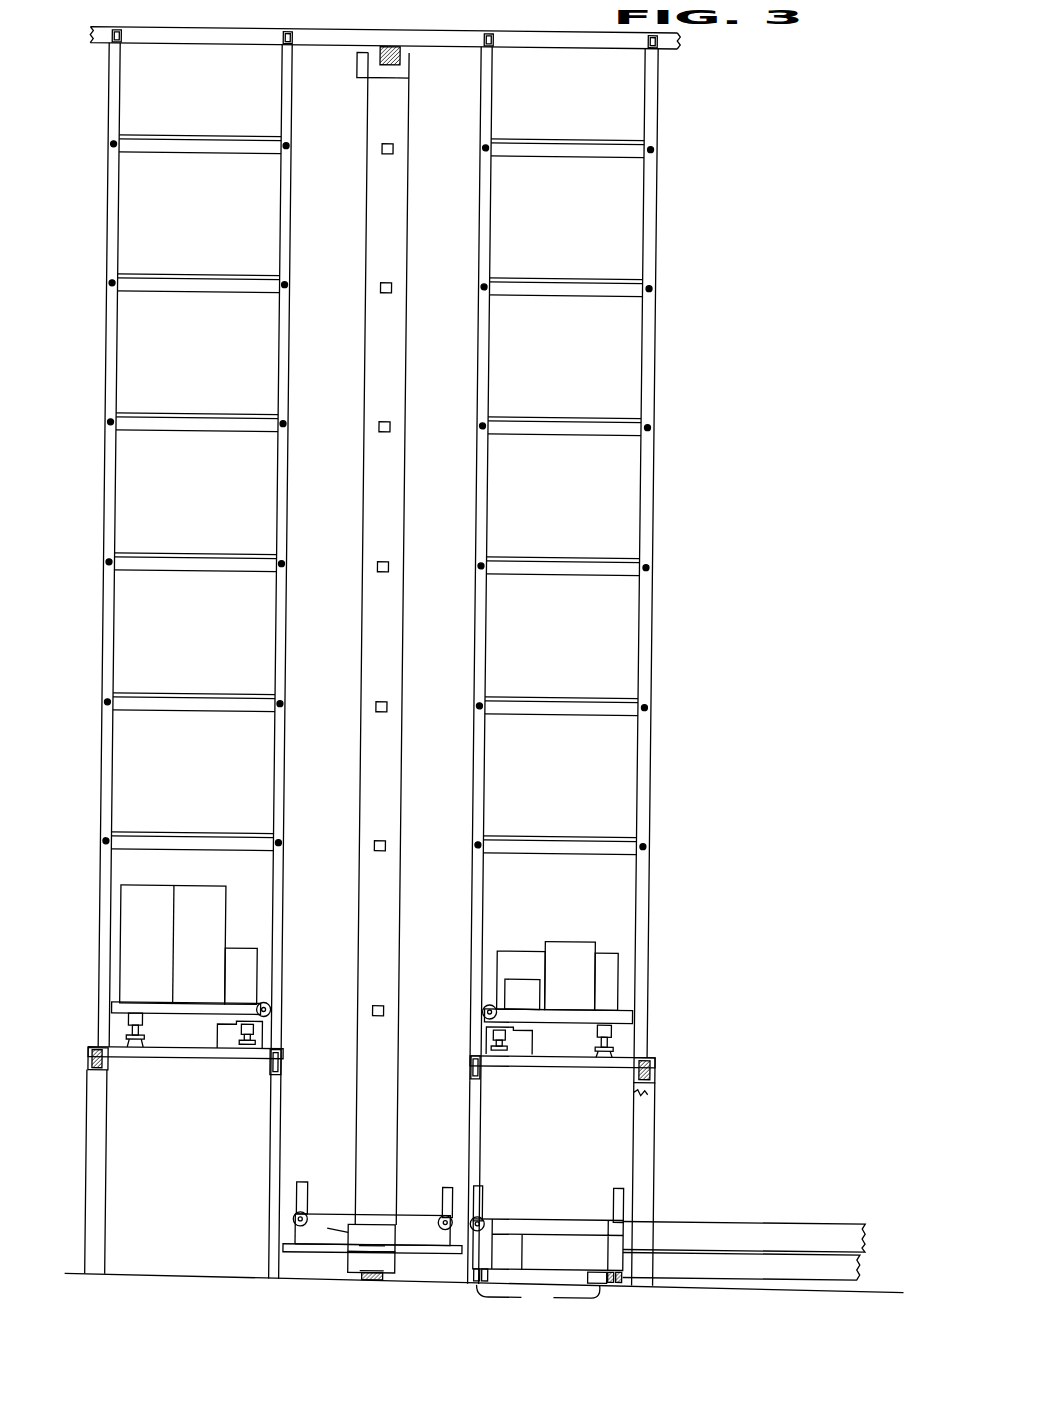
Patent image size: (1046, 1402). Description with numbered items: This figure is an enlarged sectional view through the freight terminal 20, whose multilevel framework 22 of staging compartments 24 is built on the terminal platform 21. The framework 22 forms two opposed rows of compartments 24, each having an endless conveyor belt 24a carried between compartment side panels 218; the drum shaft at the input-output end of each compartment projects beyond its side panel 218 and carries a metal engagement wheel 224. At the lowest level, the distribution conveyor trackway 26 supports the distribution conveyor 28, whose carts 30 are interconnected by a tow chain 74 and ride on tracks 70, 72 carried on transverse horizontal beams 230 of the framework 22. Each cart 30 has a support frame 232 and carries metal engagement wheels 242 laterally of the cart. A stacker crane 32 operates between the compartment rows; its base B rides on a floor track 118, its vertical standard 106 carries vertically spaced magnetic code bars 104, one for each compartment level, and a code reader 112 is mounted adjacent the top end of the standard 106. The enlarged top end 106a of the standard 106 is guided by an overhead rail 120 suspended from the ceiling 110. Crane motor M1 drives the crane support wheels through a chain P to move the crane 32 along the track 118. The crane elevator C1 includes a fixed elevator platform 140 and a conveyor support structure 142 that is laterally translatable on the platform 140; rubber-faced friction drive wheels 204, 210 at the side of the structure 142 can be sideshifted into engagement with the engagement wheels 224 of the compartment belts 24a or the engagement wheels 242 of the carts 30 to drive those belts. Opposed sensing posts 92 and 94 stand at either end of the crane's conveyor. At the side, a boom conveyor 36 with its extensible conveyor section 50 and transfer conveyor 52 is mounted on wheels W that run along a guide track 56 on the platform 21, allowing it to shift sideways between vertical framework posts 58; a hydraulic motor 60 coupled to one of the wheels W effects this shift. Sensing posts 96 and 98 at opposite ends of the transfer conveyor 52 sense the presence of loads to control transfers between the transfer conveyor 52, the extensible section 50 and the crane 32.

The freight terminal 20 is at (428, 644).
The freight terminal platform 21 is at (889, 1287).
The multilevel framework 22 is at (652, 347).
The shipment staging compartment 24 is at (408, 480).
The endless conveyor belt 24a is at (186, 276).
The distribution conveyor trackway 26 is at (128, 1034).
The distribution conveyor 28 is at (379, 998).
The cart 30 is at (138, 1003).
The stacker crane 32 is at (378, 615).
The boom conveyor 36 is at (744, 1228).
The extensible conveyor section 50 is at (826, 1220).
The transfer conveyor 52 is at (572, 1220).
The guide track 56 is at (622, 1282).
The vertical framework post 58 is at (638, 1157).
The hydraulic motor 60 is at (597, 1272).
The track 70 is at (249, 1049).
The track 72 is at (140, 1050).
The tow chain 74 is at (270, 1030).
The sensing post 92 is at (306, 1183).
The sensing post 94 is at (448, 1195).
The sensing post 96 is at (488, 1195).
The sensing post 98 is at (619, 1196).
The magnetic code bar 104 is at (388, 150).
The stacker crane vertical standard 106 is at (378, 615).
The enlarged top end 106a is at (402, 78).
The ceiling 110 is at (526, 48).
The code reader 112 is at (350, 72).
The floor track 118 is at (376, 1280).
The overhead rail 120 is at (383, 47).
The fixed elevator platform 140 is at (330, 1253).
The conveyor support structure 142 is at (305, 1212).
The rubber-faced friction drive wheel 204 is at (298, 1220).
The rubber-faced friction drive wheel 210 is at (444, 1222).
The compartment side panel 218 is at (542, 146).
The metal engagement wheel 224 is at (283, 290).
The transverse horizontal beam 230 is at (176, 1062).
The support frame 232 is at (262, 1003).
The metal engagement wheel 242 is at (276, 1012).
The base B is at (371, 1260).
The crane elevator C1 is at (300, 1233).
The crane motor M1 is at (371, 1237).
The chain P is at (330, 1227).
The wheel W is at (538, 1295).